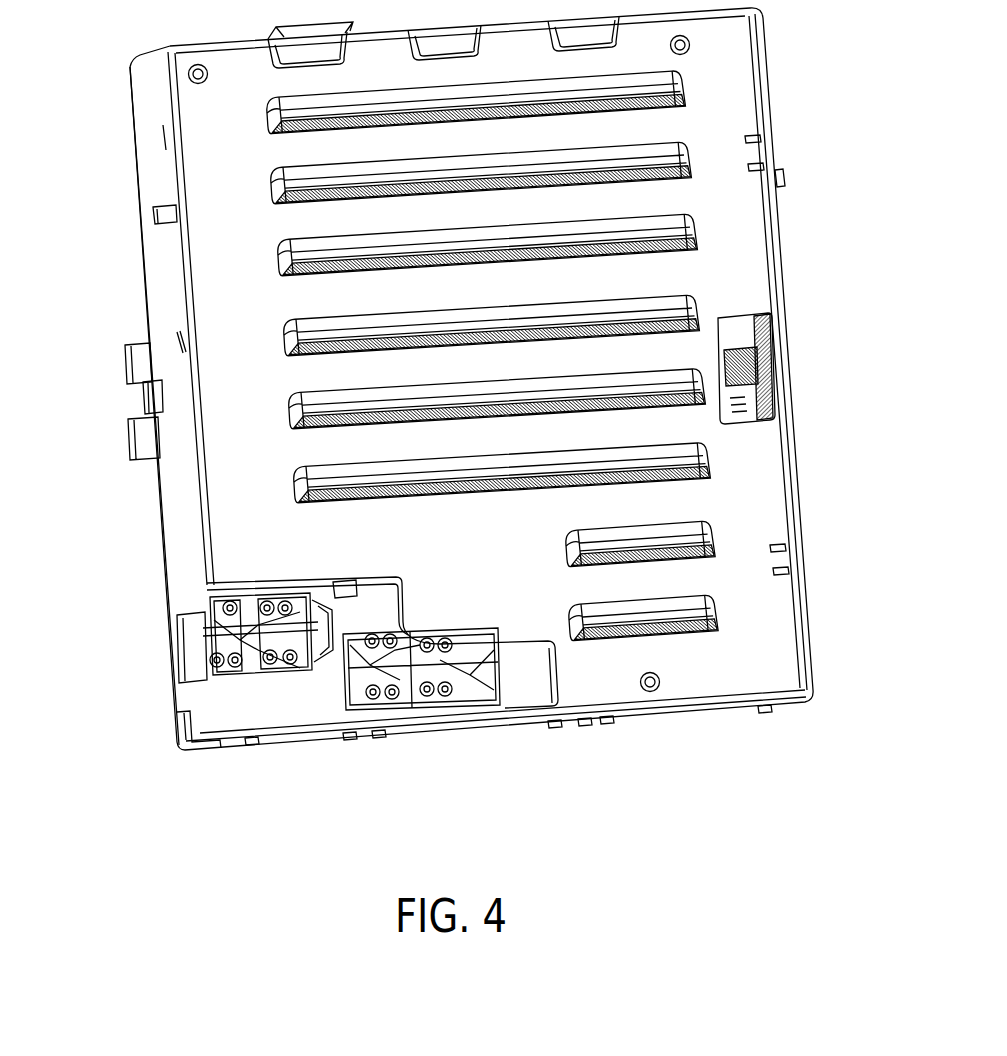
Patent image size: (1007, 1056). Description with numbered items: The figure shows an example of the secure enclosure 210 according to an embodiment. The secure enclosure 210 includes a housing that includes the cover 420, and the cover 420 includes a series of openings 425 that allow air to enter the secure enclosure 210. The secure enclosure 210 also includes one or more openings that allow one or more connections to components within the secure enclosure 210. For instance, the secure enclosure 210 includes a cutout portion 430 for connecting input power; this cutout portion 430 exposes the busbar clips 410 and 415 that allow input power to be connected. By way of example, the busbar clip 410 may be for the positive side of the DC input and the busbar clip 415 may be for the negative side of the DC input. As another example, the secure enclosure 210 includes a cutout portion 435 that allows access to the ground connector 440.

The secure enclosure 210 is at (130, 68).
The busbar clip 410 is at (232, 651).
The busbar clip 415 is at (403, 705).
The cover 420 is at (710, 670).
The openings 425 is at (627, 108).
The cutout portion 430 is at (274, 708).
The cutout portion 435 is at (747, 325).
The ground connector 440 is at (768, 355).